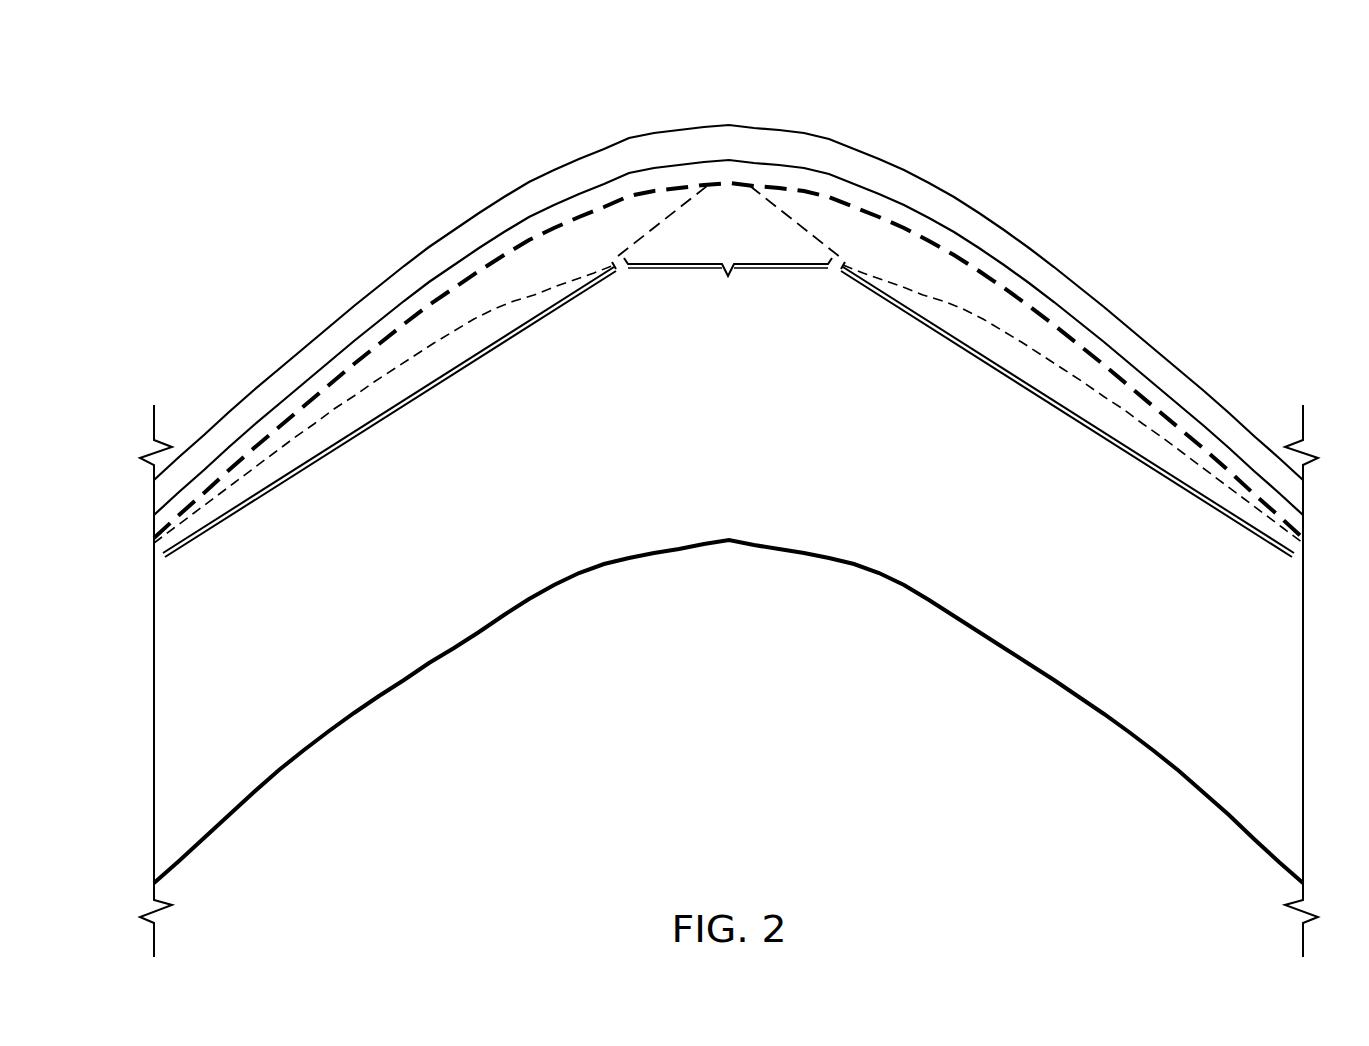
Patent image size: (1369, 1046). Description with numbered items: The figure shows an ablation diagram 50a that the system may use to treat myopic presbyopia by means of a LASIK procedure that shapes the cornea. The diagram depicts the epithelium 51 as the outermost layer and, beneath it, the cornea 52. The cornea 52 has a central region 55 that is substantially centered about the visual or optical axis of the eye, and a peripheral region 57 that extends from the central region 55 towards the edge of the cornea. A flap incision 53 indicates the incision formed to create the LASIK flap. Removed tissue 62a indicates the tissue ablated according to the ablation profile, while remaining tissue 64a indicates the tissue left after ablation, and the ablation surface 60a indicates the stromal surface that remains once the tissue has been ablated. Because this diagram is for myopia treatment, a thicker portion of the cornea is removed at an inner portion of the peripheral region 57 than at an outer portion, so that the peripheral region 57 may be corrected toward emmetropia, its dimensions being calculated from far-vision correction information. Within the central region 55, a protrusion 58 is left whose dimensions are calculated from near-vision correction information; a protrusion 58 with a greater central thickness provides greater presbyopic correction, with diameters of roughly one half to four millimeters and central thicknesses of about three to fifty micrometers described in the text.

The ablation diagram 50a is at (239, 146).
The epithelium 51 is at (654, 147).
The cornea 52 is at (744, 468).
The flap incision 53 is at (960, 257).
The central region 55 is at (728, 312).
The peripheral region 57 is at (398, 408).
The protrusion 58 is at (790, 212).
The ablation surface 60a is at (530, 290).
The removed tissue 62a is at (1128, 292).
The remaining tissue 64a is at (728, 535).